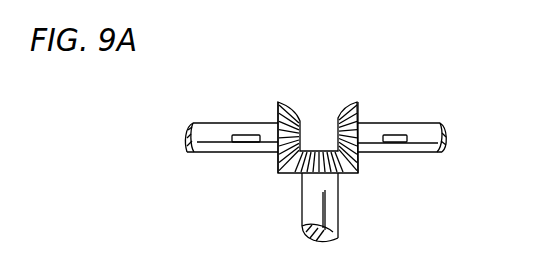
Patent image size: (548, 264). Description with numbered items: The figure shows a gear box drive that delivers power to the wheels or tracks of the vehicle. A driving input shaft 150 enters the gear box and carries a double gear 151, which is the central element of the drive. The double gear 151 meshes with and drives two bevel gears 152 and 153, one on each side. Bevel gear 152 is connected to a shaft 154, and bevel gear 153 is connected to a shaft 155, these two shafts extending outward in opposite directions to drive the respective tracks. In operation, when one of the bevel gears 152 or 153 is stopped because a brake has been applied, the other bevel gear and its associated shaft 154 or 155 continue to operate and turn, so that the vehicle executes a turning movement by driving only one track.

The driving input shaft 150 is at (322, 202).
The double gear 151 is at (297, 176).
The bevel gear 152 is at (346, 110).
The bevel gear 153 is at (299, 66).
The shaft 154 is at (423, 131).
The shaft 155 is at (213, 133).